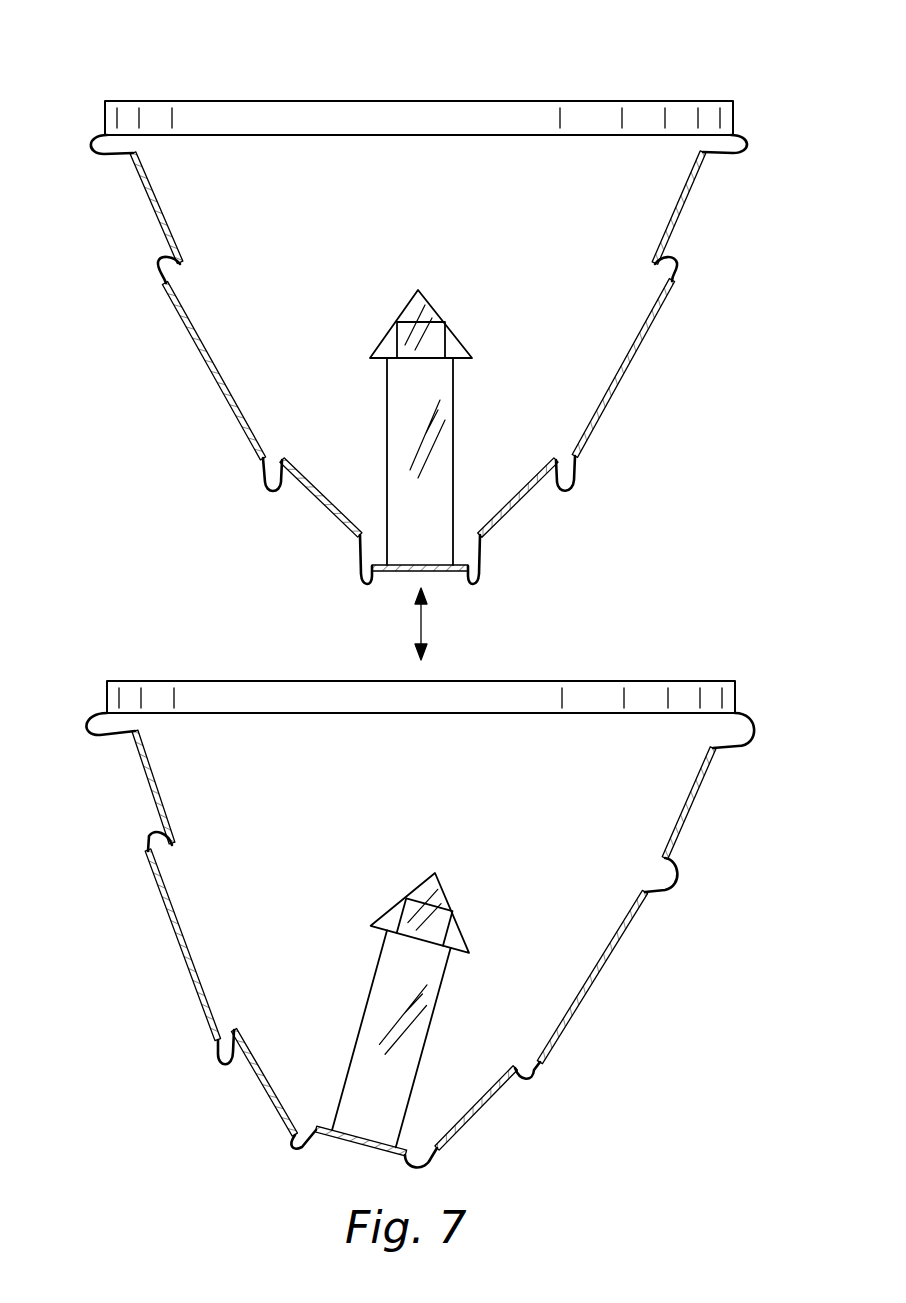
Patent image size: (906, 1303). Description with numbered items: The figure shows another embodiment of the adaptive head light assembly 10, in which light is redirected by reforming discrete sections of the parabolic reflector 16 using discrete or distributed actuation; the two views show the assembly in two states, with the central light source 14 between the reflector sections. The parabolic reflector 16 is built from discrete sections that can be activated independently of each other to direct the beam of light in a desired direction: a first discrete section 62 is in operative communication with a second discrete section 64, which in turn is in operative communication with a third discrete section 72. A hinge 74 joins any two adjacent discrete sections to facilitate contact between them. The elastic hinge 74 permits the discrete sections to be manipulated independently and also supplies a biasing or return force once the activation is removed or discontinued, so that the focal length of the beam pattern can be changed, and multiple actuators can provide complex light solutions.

The adaptive head light assembly 10 is at (428, 606).
The stylus 14 is at (397, 409).
The parabolic reflector 16 is at (636, 352).
The first discrete section 62 is at (314, 498).
The second discrete section 64 is at (210, 365).
The third discrete section 72 is at (150, 200).
The elastic hinge 74 is at (718, 154).